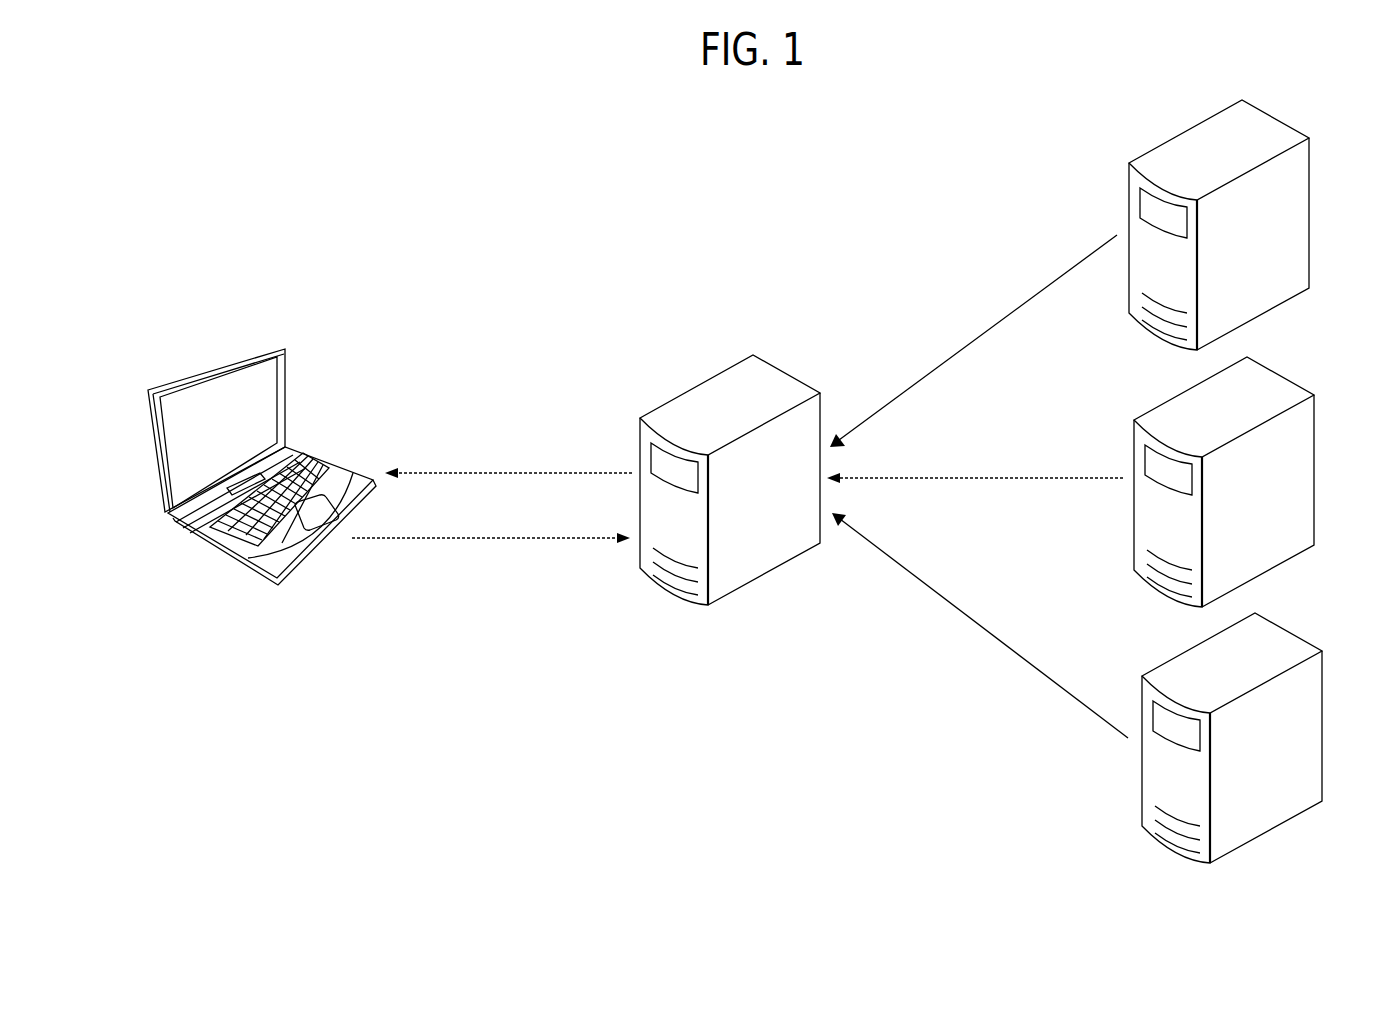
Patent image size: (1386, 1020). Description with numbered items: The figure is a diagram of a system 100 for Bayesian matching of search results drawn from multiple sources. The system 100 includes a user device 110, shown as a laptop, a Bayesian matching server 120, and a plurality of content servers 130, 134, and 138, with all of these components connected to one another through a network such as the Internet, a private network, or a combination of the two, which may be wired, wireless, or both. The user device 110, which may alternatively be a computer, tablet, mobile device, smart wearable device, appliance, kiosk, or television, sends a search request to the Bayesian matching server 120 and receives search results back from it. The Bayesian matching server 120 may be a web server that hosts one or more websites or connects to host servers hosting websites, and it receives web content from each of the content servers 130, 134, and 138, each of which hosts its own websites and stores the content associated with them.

The system 100 is at (156, 152).
The user device 110 is at (213, 368).
The Bayesian matching server 120 is at (692, 387).
The content server 130 is at (1295, 185).
The content server 134 is at (1298, 445).
The content server 138 is at (1305, 700).